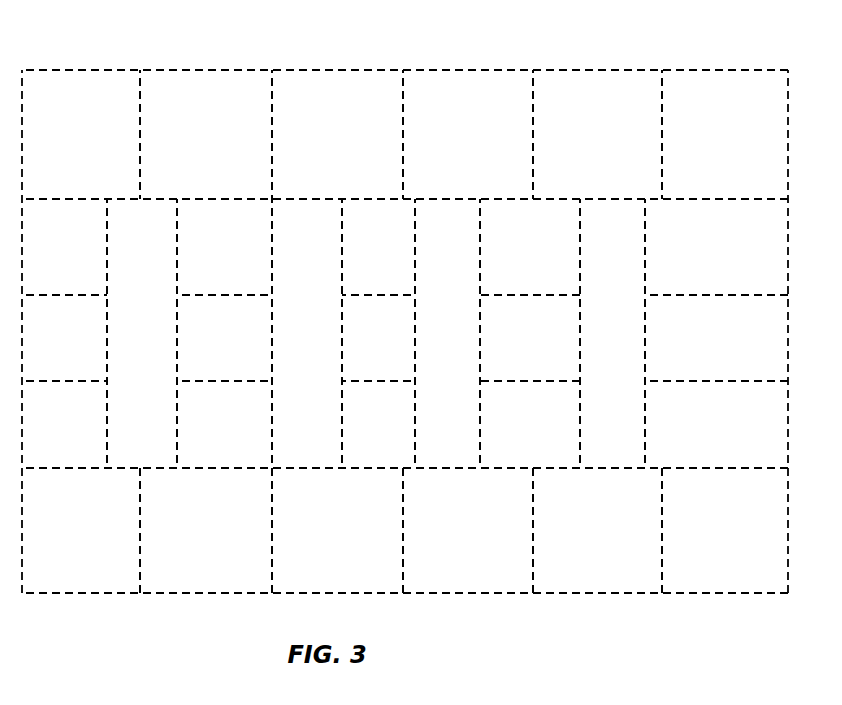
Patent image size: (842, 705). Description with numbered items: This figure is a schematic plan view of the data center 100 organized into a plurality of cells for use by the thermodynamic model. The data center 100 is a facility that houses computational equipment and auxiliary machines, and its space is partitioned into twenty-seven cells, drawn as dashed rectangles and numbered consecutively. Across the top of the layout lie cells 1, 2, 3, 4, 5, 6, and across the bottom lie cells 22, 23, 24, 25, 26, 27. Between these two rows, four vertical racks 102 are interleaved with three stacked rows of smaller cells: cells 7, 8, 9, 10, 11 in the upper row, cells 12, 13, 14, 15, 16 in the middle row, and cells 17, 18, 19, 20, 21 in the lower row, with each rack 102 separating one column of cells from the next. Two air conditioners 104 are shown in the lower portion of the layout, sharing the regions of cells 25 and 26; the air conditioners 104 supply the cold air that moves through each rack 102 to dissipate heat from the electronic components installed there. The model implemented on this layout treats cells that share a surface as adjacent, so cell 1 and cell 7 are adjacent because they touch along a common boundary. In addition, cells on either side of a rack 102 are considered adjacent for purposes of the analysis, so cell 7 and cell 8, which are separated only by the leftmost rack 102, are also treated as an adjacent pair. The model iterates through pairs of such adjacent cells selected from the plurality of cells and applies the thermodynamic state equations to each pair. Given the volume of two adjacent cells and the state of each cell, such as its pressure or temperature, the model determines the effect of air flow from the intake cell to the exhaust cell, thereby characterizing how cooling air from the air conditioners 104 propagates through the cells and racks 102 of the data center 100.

The data center 100 is at (622, 45).
The rack 102 is at (125, 361).
The air conditioner 104 is at (510, 563).
The cell 1 is at (68, 147).
The cell 2 is at (200, 147).
The cell 3 is at (330, 147).
The cell 4 is at (468, 147).
The cell 5 is at (586, 147).
The cell 6 is at (706, 147).
The cell 7 is at (56, 265).
The cell 8 is at (216, 265).
The cell 9 is at (368, 265).
The cell 10 is at (515, 265).
The cell 11 is at (688, 265).
The cell 12 is at (51, 346).
The cell 13 is at (211, 346).
The cell 14 is at (363, 346).
The cell 15 is at (515, 346).
The cell 16 is at (688, 346).
The cell 17 is at (51, 433).
The cell 18 is at (211, 433).
The cell 19 is at (363, 433).
The cell 20 is at (515, 433).
The cell 21 is at (688, 433).
The cell 22 is at (65, 540).
The cell 23 is at (195, 540).
The cell 24 is at (325, 540).
The cell 25 is at (420, 510).
The cell 26 is at (550, 510).
The cell 27 is at (680, 510).